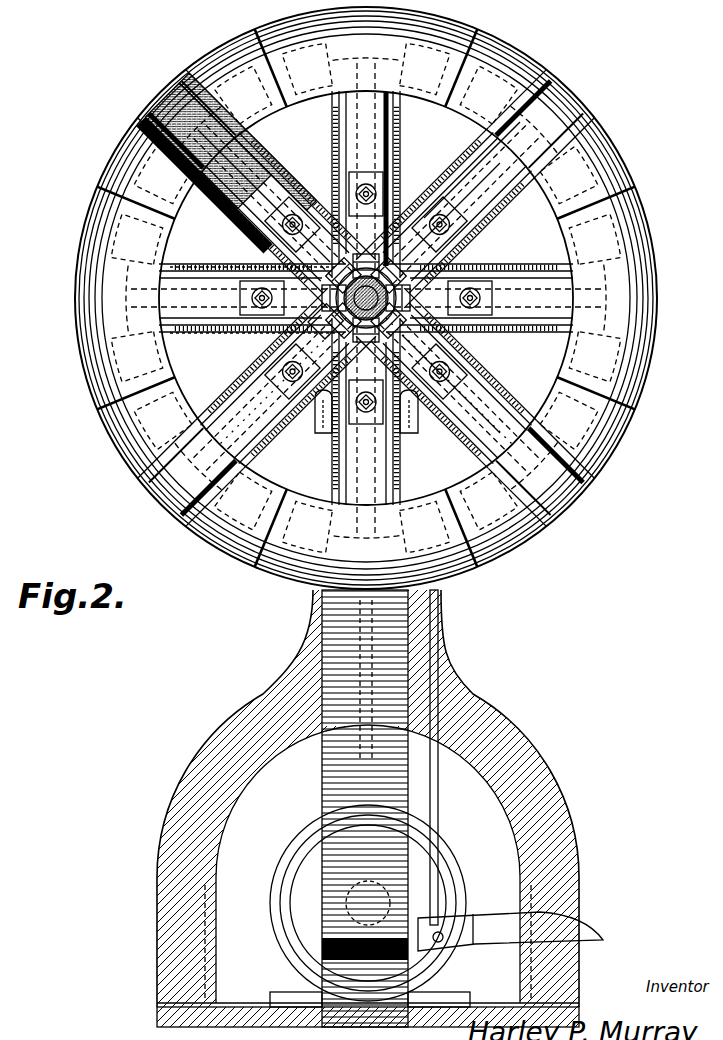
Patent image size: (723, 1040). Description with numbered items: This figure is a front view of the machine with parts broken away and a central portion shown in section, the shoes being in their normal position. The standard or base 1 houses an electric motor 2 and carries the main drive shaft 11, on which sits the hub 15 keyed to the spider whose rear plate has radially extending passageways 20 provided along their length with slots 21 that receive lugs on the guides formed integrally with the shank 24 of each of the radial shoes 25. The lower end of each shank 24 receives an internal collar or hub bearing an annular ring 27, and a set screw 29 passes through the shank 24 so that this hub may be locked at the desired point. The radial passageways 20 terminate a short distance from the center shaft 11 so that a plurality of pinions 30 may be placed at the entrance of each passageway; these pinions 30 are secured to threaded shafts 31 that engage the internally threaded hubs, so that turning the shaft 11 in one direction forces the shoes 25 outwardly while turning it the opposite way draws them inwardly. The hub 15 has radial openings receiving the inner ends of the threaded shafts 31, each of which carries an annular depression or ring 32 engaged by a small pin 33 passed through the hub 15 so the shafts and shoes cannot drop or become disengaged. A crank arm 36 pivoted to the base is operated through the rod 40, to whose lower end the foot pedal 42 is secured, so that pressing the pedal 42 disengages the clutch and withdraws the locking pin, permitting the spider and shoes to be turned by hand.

The standard 1 is at (323, 651).
The electric motor 2 is at (300, 888).
The main drive shaft 11 is at (400, 208).
The hub 15 is at (276, 334).
The radially extending passageways 20 is at (488, 232).
The slots 21 is at (448, 184).
The shank 24 is at (535, 318).
The radial shoes 25 is at (622, 176).
The annular ring 27 is at (276, 248).
The set screw 29 is at (295, 215).
The pinions 30 is at (334, 208).
The threaded shafts 31 is at (262, 162).
The annular depression or ring 32 is at (288, 352).
The small pin 33 is at (266, 259).
The crank arm 36 is at (408, 432).
The rod 40 is at (440, 612).
The foot pedal 42 is at (496, 944).